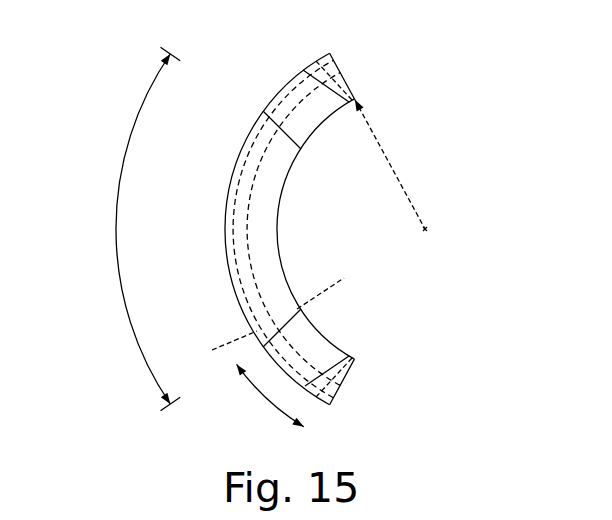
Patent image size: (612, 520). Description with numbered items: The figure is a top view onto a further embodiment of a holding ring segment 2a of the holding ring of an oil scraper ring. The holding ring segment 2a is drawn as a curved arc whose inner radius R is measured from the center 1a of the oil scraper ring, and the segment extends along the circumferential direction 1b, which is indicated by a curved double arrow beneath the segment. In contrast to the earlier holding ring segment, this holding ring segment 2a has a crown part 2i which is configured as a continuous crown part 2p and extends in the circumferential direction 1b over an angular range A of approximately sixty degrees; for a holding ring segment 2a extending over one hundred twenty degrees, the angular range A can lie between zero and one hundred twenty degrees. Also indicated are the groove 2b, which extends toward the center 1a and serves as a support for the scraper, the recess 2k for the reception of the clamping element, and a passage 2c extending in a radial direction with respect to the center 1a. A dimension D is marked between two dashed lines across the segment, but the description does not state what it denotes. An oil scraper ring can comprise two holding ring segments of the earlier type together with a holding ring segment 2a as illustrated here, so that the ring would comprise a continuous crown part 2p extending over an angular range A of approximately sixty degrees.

The holding ring segment 2a is at (400, 60).
The groove 2b is at (256, 228).
The passage 2c is at (291, 82).
The crown part 2i is at (263, 111).
The recess 2k is at (229, 158).
The continuous crown part 2p is at (273, 180).
The center 1a is at (425, 229).
The circumferential direction 1b is at (263, 397).
The inner radius R is at (393, 170).
The angular range A is at (113, 222).
The thickness D is at (333, 276).